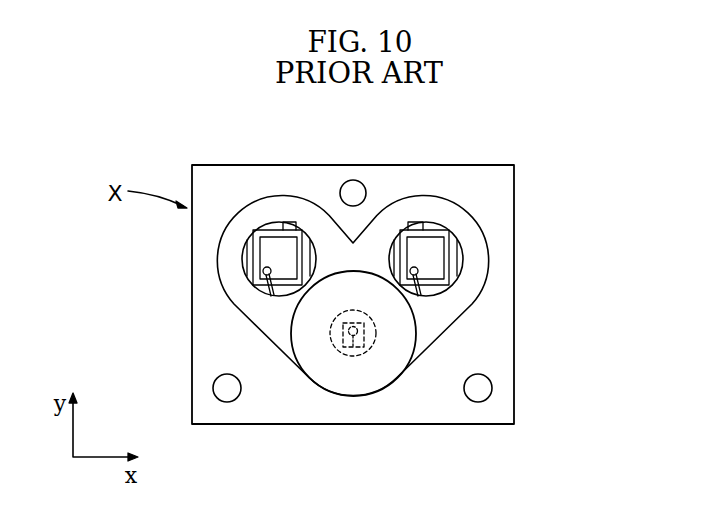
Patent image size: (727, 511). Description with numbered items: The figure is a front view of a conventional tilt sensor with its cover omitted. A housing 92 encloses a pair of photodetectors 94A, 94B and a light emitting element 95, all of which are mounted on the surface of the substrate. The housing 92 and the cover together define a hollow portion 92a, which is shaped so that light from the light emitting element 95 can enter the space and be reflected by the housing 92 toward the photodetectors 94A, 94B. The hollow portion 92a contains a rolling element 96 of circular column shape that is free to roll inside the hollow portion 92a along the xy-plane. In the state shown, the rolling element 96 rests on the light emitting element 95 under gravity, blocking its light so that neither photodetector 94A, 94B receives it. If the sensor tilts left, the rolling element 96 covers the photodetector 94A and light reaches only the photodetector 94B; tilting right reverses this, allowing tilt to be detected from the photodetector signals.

The housing 92 is at (500, 234).
The hollow portion 92a is at (445, 308).
The photodetector 94A is at (277, 247).
The photodetector 94B is at (437, 247).
The light emitting element 95 is at (346, 350).
The rolling element 96 is at (363, 378).